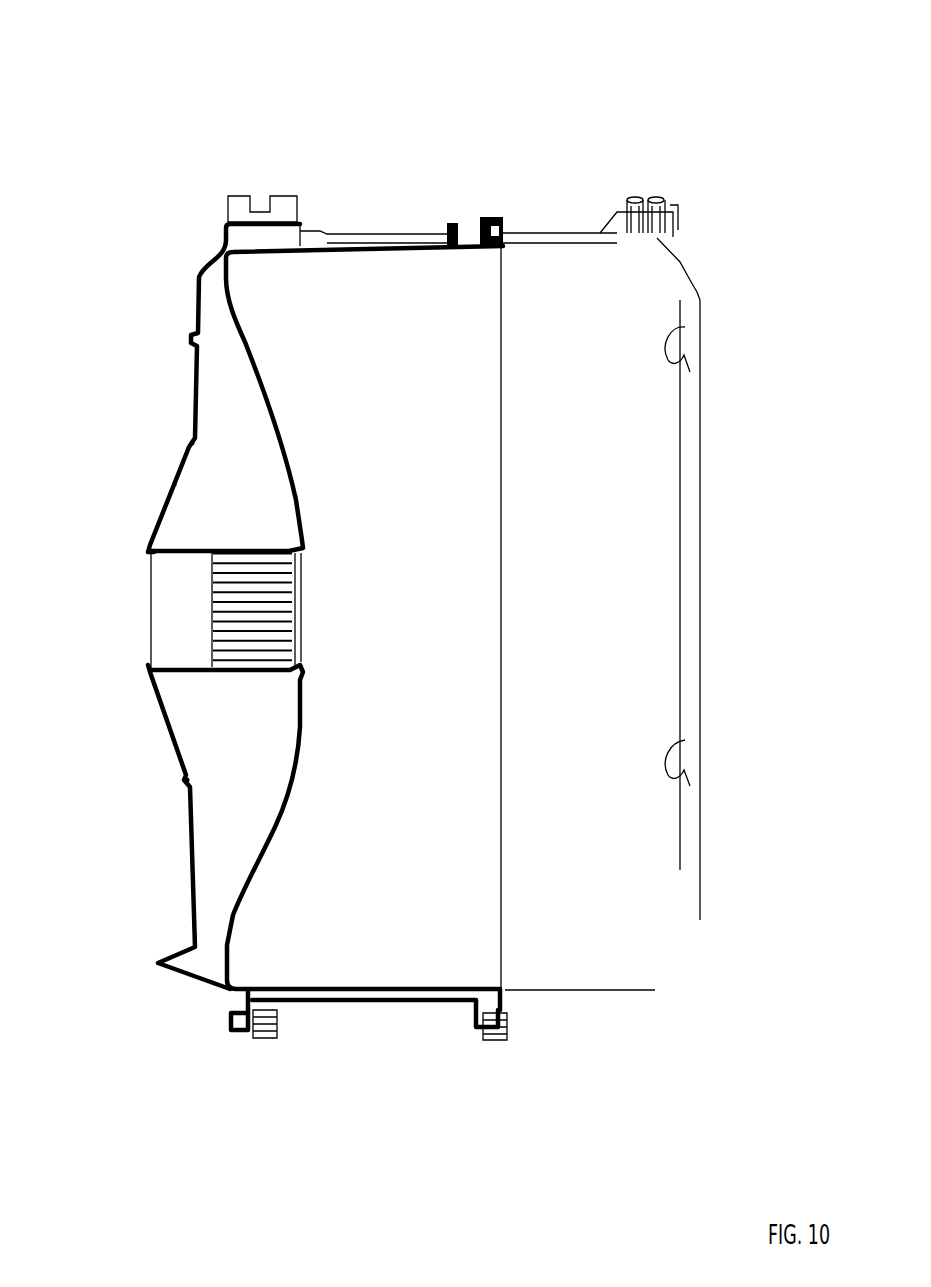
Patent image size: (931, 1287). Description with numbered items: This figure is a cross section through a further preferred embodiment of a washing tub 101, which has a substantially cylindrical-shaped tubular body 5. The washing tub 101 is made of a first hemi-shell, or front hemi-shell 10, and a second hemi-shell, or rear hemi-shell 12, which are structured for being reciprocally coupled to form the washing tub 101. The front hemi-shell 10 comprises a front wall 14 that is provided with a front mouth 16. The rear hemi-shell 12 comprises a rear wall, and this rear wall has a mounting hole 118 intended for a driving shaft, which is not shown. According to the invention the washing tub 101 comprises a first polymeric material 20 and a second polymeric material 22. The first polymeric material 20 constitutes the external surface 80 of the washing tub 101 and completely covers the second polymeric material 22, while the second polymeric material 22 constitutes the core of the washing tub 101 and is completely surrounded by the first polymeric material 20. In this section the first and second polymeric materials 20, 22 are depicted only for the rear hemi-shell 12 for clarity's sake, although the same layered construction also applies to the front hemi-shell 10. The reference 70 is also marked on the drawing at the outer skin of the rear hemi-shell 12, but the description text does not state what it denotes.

The washing tub 101 is at (128, 98).
The rear hemi-shell 12 is at (348, 186).
The tubular body 5 is at (473, 240).
The front hemi-shell 10 is at (579, 178).
The front wall 14 is at (684, 270).
The front mouth 16 is at (716, 510).
The first polymeric material 20 is at (196, 312).
The second polymeric material 22 is at (250, 423).
The protrusion 70 is at (185, 783).
The external surface 80 is at (158, 478).
The mounting hole 118 is at (166, 604).